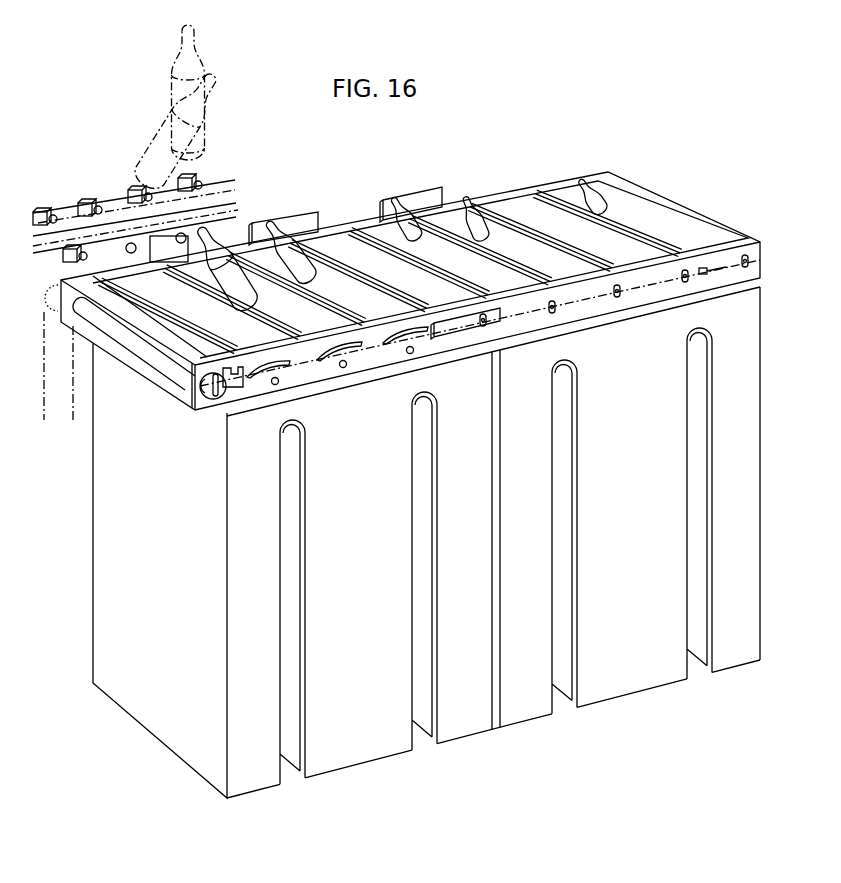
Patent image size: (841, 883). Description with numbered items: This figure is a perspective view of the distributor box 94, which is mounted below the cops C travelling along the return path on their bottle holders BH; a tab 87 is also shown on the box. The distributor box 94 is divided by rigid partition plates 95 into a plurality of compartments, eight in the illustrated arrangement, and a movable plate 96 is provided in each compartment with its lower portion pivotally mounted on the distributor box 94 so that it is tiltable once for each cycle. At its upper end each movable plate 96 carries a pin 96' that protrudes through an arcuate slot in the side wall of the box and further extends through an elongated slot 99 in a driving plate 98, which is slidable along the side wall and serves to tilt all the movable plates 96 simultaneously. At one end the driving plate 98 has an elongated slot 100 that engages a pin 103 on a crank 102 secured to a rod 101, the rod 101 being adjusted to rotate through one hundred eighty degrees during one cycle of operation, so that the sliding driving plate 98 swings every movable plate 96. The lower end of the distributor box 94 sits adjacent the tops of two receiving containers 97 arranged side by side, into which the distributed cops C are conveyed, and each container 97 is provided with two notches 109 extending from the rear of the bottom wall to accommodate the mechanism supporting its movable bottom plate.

The cops C is at (199, 60).
The bottle holders BH is at (77, 203).
The tab 87 is at (287, 225).
The distributor box 94 is at (581, 200).
The rigid partition plates 95 is at (444, 195).
The movable plate 96 is at (390, 260).
The pin 96' is at (391, 366).
The receiving containers 97 is at (752, 394).
The driving plate 98 is at (455, 335).
The elongated slot 99 is at (618, 295).
The elongated slot 100 is at (216, 399).
The rod 101 is at (162, 358).
The crank 102 is at (208, 398).
The pin 103 is at (227, 392).
The notches 109 is at (562, 428).